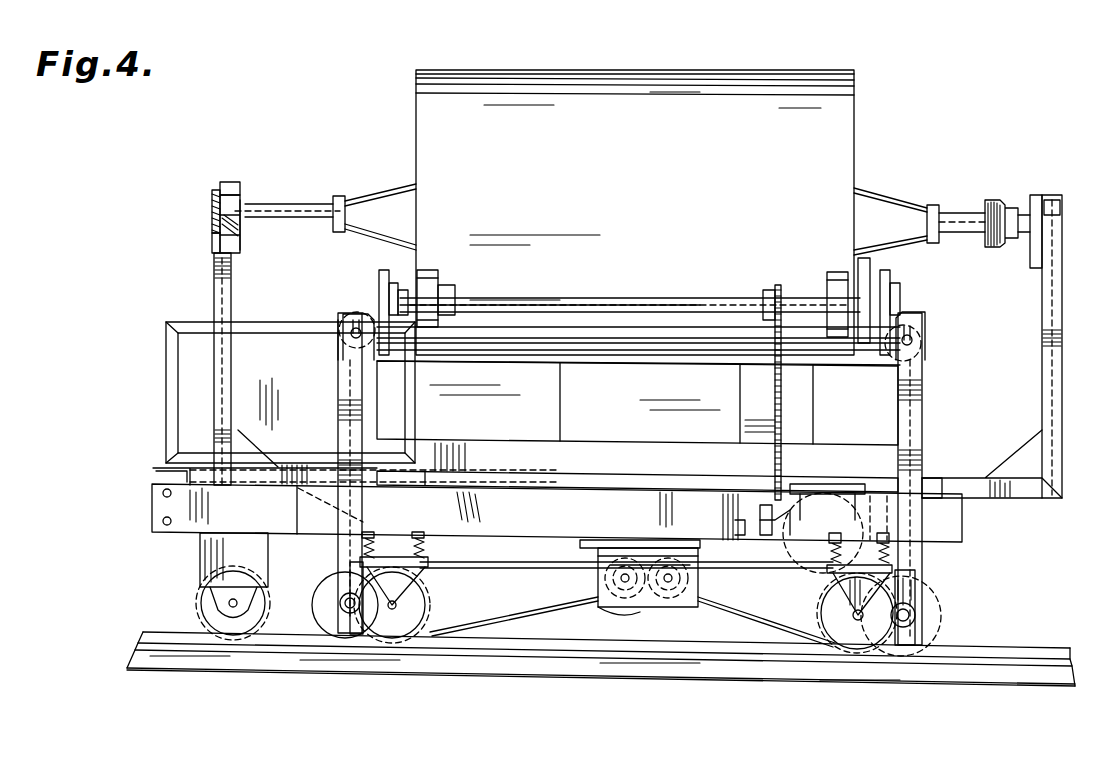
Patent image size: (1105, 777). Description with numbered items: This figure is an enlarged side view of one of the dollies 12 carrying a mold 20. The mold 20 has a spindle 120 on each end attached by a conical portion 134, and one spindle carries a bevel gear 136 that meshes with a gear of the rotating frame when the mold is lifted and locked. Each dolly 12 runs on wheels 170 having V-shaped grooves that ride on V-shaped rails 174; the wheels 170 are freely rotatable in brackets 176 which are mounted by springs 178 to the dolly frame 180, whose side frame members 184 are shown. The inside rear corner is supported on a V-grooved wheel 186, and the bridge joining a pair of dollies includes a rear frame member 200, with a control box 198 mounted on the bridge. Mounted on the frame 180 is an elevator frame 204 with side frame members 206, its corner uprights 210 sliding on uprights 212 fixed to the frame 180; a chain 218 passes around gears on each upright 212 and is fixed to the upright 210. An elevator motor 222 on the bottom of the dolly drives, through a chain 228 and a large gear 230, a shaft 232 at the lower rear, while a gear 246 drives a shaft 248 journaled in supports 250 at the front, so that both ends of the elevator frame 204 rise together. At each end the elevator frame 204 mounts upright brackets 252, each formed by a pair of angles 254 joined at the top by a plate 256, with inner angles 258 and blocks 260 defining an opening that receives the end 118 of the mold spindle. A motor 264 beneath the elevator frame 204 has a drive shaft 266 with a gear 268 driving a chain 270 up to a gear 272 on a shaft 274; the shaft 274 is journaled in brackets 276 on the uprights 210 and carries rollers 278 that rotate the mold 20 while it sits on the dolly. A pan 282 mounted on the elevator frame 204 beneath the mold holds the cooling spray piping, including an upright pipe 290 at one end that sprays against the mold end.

The dolly 12 is at (338, 320).
The mold 20 is at (652, 168).
The spindle end 118 is at (240, 215).
The spindle 120 is at (305, 204).
The conical portion 134 is at (380, 191).
The bevel gear 136 is at (1011, 204).
The wheel 170 is at (392, 640).
The rail 174 is at (1015, 650).
The bracket 176 is at (420, 568).
The spring 178 is at (362, 546).
The dolly frame 180 is at (640, 480).
The side frame member 184 is at (545, 541).
The wheel 186 is at (200, 606).
The control box 198 is at (168, 372).
The rear frame member 200 is at (152, 484).
The elevator frame 204 is at (628, 444).
The side frame member 206 is at (544, 430).
The upright 210 is at (350, 310).
The upright 212 is at (350, 370).
The chain 218 is at (924, 458).
The elevator motor 222 is at (597, 580).
The chain 228 is at (494, 604).
The large gear 230 is at (333, 588).
The shaft 232 is at (330, 608).
The gear 246 is at (935, 592).
The shaft 248 is at (916, 615).
The support 250 is at (916, 633).
The upright bracket 252 is at (212, 272).
The angle 254 is at (212, 246).
The plate 256 is at (212, 222).
The inner angle 258 is at (240, 247).
The block 260 is at (232, 182).
The motor 264 is at (820, 485).
The drive shaft 266 is at (740, 536).
The gear 268 is at (778, 540).
The chain 270 is at (775, 402).
The gear 272 is at (766, 289).
The shaft 274 is at (670, 298).
The bracket 276 is at (379, 290).
The roller 278 is at (422, 282).
The pan 282 is at (860, 422).
The upright pipe 290 is at (870, 270).